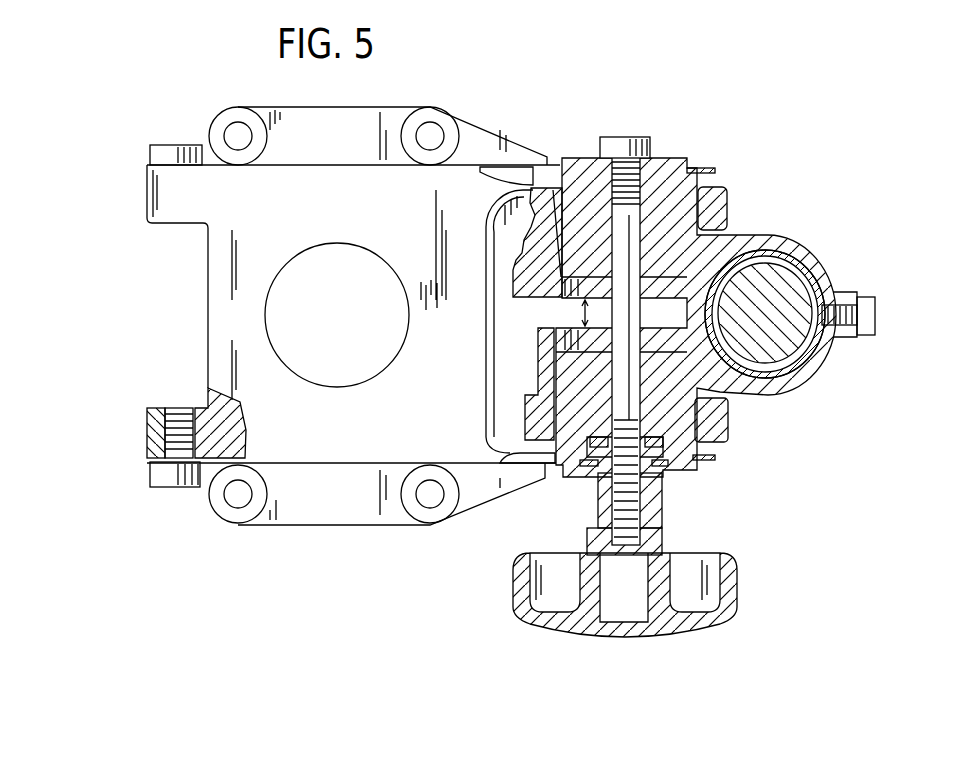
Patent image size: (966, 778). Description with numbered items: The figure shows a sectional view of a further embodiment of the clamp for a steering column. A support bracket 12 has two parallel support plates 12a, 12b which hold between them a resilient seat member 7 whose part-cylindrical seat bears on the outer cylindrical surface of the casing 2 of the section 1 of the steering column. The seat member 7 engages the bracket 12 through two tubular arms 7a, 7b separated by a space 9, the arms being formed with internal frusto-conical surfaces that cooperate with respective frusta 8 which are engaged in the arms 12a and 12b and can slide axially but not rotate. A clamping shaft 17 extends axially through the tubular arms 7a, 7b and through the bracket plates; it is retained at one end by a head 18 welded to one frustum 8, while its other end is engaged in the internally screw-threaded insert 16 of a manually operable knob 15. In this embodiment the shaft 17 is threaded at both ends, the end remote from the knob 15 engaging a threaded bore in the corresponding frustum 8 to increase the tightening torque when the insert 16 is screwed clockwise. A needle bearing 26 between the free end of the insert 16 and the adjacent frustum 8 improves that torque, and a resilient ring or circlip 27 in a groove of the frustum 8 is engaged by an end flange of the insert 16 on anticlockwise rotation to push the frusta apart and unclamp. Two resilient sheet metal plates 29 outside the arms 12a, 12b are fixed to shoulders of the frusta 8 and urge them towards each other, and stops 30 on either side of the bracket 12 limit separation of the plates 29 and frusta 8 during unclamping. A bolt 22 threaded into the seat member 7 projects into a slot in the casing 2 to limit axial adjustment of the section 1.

The section of the steering column 1 is at (773, 302).
The casing 2 is at (775, 260).
The resilient seat member 7 is at (830, 248).
The arm 7a is at (516, 283).
The arm 7b is at (538, 353).
The frustum 8 is at (700, 180).
The space 9 is at (582, 313).
The support bracket 12 is at (207, 313).
The support plate 12a is at (728, 415).
The support plate 12b is at (747, 221).
The manually operable knob 15 is at (733, 556).
The internally screw-threaded insert 16 is at (664, 538).
The clamping shaft 17 is at (640, 318).
The head 18 is at (612, 143).
The bolt 22 is at (875, 312).
The needle bearing 26 is at (692, 462).
The resilient ring or circlip 27 is at (655, 485).
The resilient sheet metal plate 29 is at (552, 168).
The stop 30 is at (520, 146).